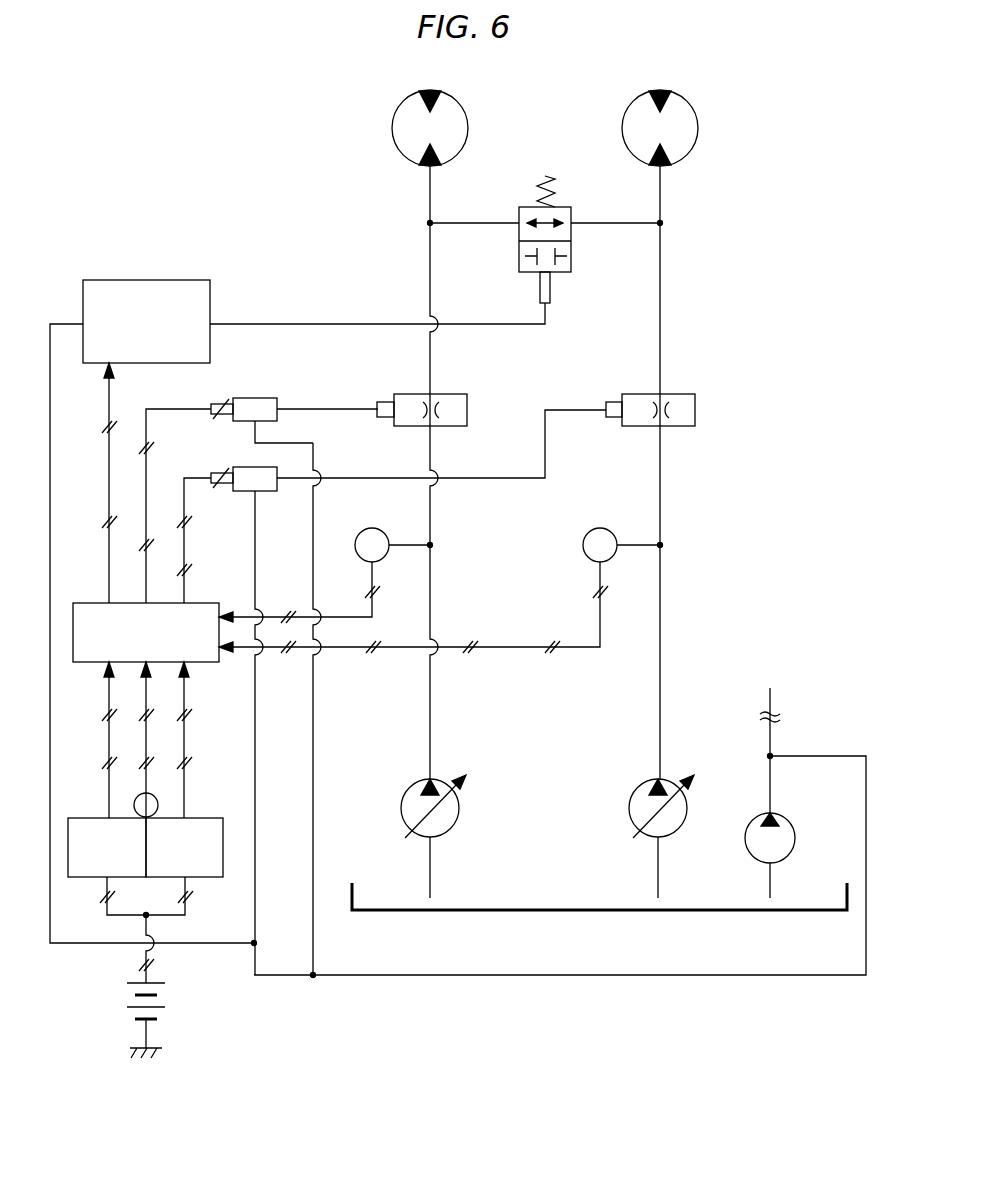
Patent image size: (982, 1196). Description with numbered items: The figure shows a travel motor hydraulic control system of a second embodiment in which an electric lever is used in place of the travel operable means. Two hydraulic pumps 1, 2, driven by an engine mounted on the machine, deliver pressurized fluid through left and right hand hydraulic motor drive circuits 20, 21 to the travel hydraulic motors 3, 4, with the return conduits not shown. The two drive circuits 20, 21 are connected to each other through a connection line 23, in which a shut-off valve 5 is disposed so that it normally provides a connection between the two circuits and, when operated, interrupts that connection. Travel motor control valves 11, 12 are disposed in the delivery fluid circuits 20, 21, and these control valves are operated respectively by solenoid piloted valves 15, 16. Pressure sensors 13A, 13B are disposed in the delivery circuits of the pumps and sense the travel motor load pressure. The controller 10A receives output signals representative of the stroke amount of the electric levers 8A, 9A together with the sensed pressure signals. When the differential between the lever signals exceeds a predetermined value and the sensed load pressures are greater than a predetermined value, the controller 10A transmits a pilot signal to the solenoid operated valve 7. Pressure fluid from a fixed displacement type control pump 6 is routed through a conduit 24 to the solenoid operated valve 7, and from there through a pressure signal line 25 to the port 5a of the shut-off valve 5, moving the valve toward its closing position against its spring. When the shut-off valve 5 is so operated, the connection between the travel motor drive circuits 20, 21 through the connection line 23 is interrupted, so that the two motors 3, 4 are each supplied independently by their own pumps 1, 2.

The hydraulic pump 1 is at (400, 808).
The hydraulic pump 2 is at (628, 808).
The travel hydraulic motor 3 is at (394, 127).
The travel hydraulic motor 4 is at (698, 128).
The shut-off valve 5 is at (571, 207).
The port 5a is at (550, 288).
The fixed displacement type control pump 6 is at (795, 838).
The solenoid operated valve 7 is at (146, 280).
The electric lever 8A is at (97, 818).
The electric lever 9A is at (195, 818).
The controller 10A is at (97, 603).
The travel motor control valve 11 is at (467, 409).
The travel motor control valve 12 is at (695, 409).
The pressure sensor 13A is at (375, 529).
The pressure sensor 13B is at (603, 529).
The solenoid piloted valve 15 is at (255, 398).
The solenoid piloted valve 16 is at (243, 467).
The hydraulic motor drive circuit 20 is at (428, 268).
The hydraulic motor drive circuit 21 is at (660, 293).
The connection line 23 is at (462, 223).
The conduit 24 is at (558, 975).
The pressure signal line 25 is at (462, 324).